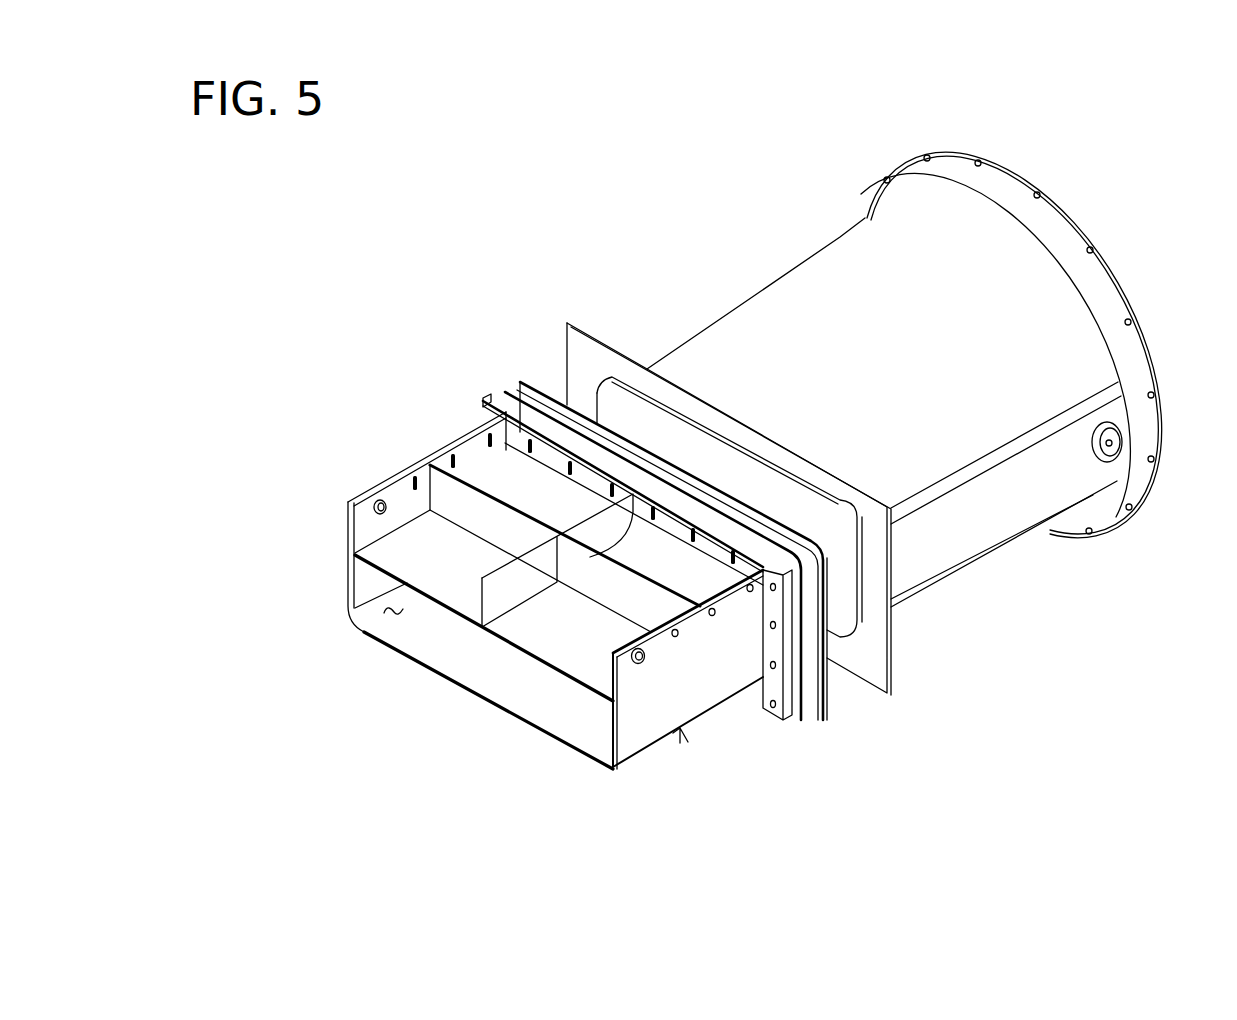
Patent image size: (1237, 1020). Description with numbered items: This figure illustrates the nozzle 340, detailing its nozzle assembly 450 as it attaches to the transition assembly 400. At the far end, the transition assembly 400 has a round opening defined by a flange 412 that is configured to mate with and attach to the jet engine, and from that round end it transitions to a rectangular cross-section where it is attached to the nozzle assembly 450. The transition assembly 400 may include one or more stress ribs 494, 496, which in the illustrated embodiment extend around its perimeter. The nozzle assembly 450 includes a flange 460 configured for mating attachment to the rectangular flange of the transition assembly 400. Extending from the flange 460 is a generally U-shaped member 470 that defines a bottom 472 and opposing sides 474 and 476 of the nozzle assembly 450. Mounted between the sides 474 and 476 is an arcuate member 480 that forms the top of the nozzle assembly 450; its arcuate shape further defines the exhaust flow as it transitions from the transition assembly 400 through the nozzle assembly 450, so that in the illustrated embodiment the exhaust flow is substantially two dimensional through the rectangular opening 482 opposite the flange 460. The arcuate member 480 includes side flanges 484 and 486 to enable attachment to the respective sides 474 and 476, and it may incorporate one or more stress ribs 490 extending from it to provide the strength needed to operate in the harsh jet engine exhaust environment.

The nozzle 340 is at (788, 226).
The transition assembly 400 is at (925, 552).
The flange 412 is at (1107, 287).
The stress rib 494 is at (830, 660).
The stress rib 496 is at (827, 660).
The nozzle assembly 450 is at (745, 725).
The flange 460 is at (482, 410).
The U-shaped member 470 is at (573, 713).
The bottom 472 is at (458, 683).
The side 474 is at (633, 733).
The side 476 is at (348, 588).
The arcuate member 480 is at (563, 647).
The rectangular opening 482 is at (382, 608).
The side flange 484 is at (397, 496).
The side flange 486 is at (613, 640).
The stress rib 490 is at (413, 645).